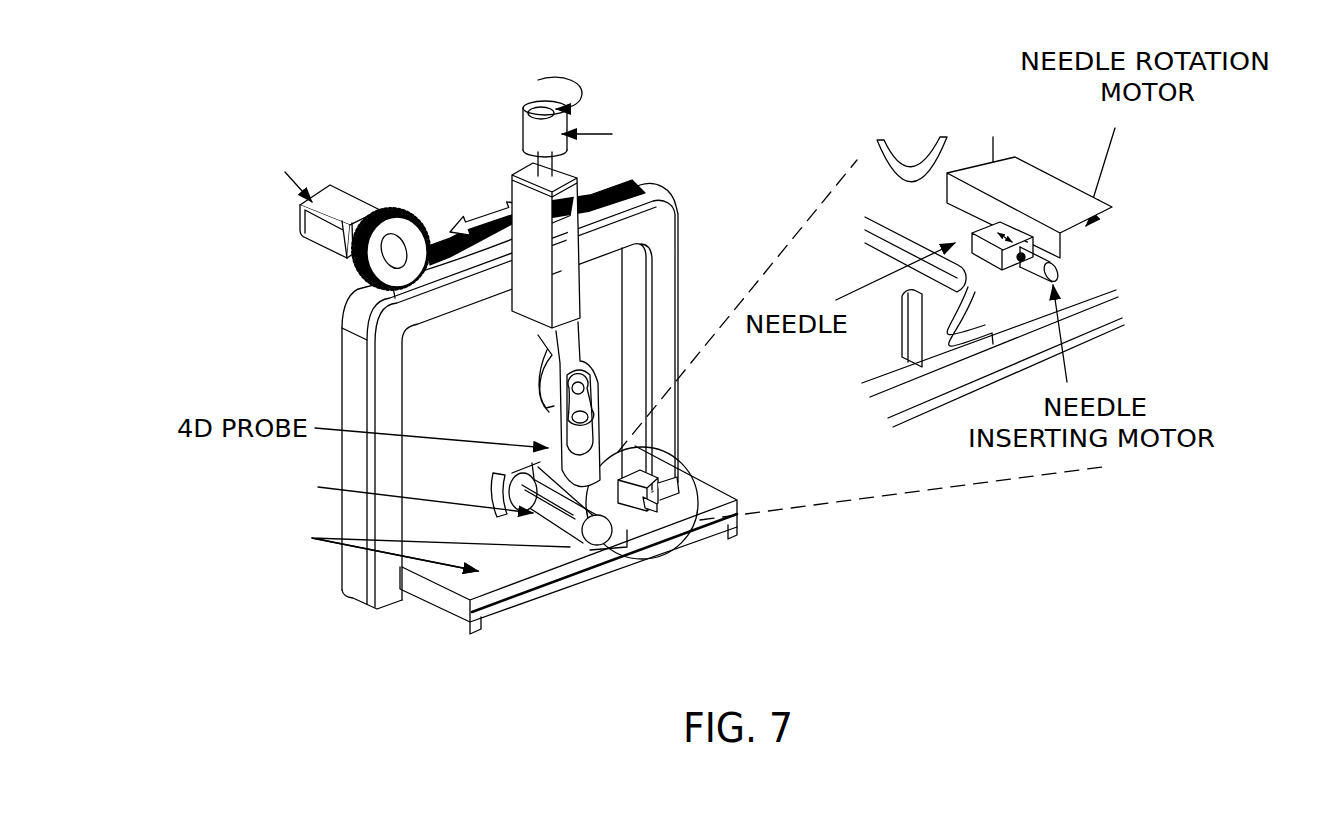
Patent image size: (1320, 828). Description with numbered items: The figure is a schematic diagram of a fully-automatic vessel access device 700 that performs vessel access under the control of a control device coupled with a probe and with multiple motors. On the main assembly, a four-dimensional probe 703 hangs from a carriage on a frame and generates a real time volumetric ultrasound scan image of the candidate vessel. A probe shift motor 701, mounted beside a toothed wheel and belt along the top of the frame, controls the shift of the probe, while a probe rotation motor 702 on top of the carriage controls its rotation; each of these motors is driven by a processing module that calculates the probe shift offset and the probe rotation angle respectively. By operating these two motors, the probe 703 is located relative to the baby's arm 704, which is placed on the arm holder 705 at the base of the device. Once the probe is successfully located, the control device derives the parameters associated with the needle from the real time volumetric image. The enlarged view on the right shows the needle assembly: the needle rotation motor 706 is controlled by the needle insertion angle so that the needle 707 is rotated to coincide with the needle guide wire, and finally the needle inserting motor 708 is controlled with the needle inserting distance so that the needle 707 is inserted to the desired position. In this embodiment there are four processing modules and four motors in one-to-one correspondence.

The fully-automatic vessel access device 700 is at (752, 62).
The probe shift motor 701 is at (313, 223).
The probe rotation motor 702 is at (530, 128).
The 4D probe 703 is at (580, 473).
The baby's arm 704 is at (584, 534).
The arm holder 705 is at (577, 553).
The needle rotation motor 706 is at (1129, 275).
The needle 707 is at (977, 197).
The needle inserting motor 708 is at (1044, 308).